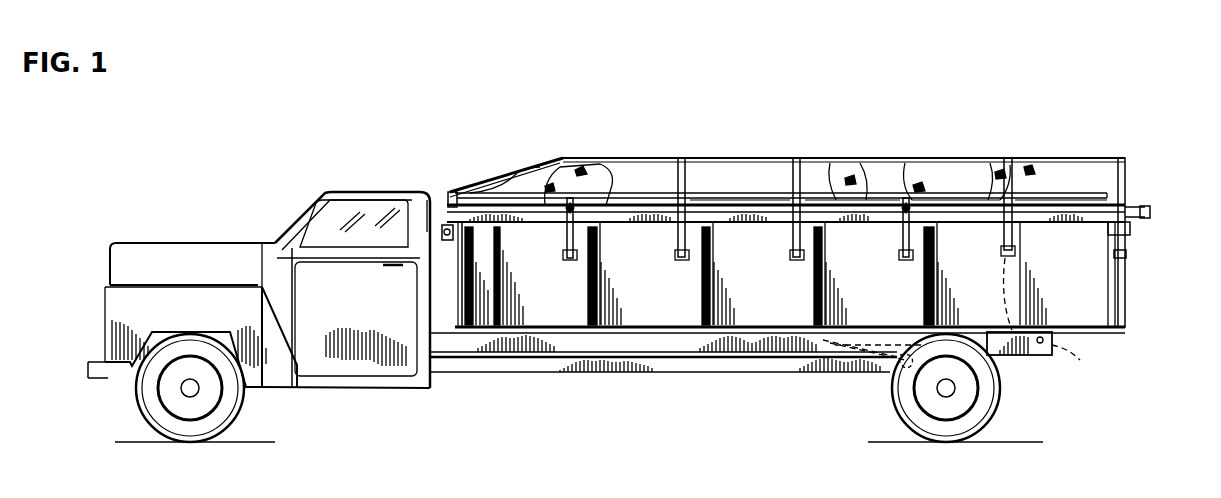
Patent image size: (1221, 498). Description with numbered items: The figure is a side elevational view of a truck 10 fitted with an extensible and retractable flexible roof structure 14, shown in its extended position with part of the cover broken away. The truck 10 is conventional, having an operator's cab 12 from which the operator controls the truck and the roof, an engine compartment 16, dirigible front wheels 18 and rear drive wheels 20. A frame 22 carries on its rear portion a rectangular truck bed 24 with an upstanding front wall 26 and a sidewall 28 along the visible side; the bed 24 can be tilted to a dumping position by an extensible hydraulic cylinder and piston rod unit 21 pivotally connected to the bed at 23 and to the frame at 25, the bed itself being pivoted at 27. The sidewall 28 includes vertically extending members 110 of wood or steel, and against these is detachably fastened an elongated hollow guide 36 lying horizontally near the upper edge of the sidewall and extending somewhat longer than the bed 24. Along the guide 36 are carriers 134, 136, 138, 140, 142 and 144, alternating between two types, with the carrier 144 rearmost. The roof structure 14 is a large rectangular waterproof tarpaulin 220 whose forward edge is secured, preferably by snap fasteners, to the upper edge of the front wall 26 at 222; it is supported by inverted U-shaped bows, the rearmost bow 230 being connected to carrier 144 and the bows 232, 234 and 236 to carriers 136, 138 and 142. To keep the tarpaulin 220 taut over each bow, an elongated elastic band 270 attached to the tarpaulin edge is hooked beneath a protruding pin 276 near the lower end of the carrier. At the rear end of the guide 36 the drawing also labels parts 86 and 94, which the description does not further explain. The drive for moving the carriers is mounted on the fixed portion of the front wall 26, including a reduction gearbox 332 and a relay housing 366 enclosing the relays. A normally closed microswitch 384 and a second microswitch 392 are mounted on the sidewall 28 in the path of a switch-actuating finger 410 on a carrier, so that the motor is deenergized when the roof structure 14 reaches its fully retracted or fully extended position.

The truck 10 is at (265, 188).
The operator's cab 12 is at (362, 192).
The flexible roof structure 14 is at (591, 142).
The engine compartment 16 is at (177, 258).
The front wheels 18 is at (243, 400).
The rear drive wheels 20 is at (1000, 412).
The hydraulic cylinder and piston rod unit 21 is at (835, 345).
The frame 22 is at (706, 373).
The pivotal connection 23 is at (822, 345).
The truck bed 24 is at (786, 330).
The pivotal connection 25 is at (907, 368).
The front wall 26 is at (445, 385).
The pivot 27 is at (1077, 363).
The sidewall 28 is at (650, 310).
The elongated hollow guide 36 is at (1112, 288).
The hitch 86 is at (1136, 206).
The hitch coupling 94 is at (1151, 212).
The vertically extending members 110 is at (480, 300).
The carrier 134 is at (534, 198).
The carrier 136 is at (672, 192).
The carrier 138 is at (828, 195).
The carrier 140 is at (917, 195).
The carrier 142 is at (1016, 200).
The carrier 144 is at (1132, 230).
The tarpaulin 220 is at (567, 160).
The forward edge securement 222 is at (432, 215).
The rearmost bow 230 is at (1124, 165).
The bow 232 is at (683, 175).
The bow 234 is at (803, 170).
The bow 236 is at (1010, 170).
The elastic band 270 is at (912, 200).
The pin 276 is at (1128, 255).
The reduction gearbox 332 is at (441, 226).
The relay housing 366 is at (456, 198).
The microswitch 384 is at (710, 195).
The microswitch 392 is at (1053, 300).
The switch-actuating finger 410 is at (1005, 357).